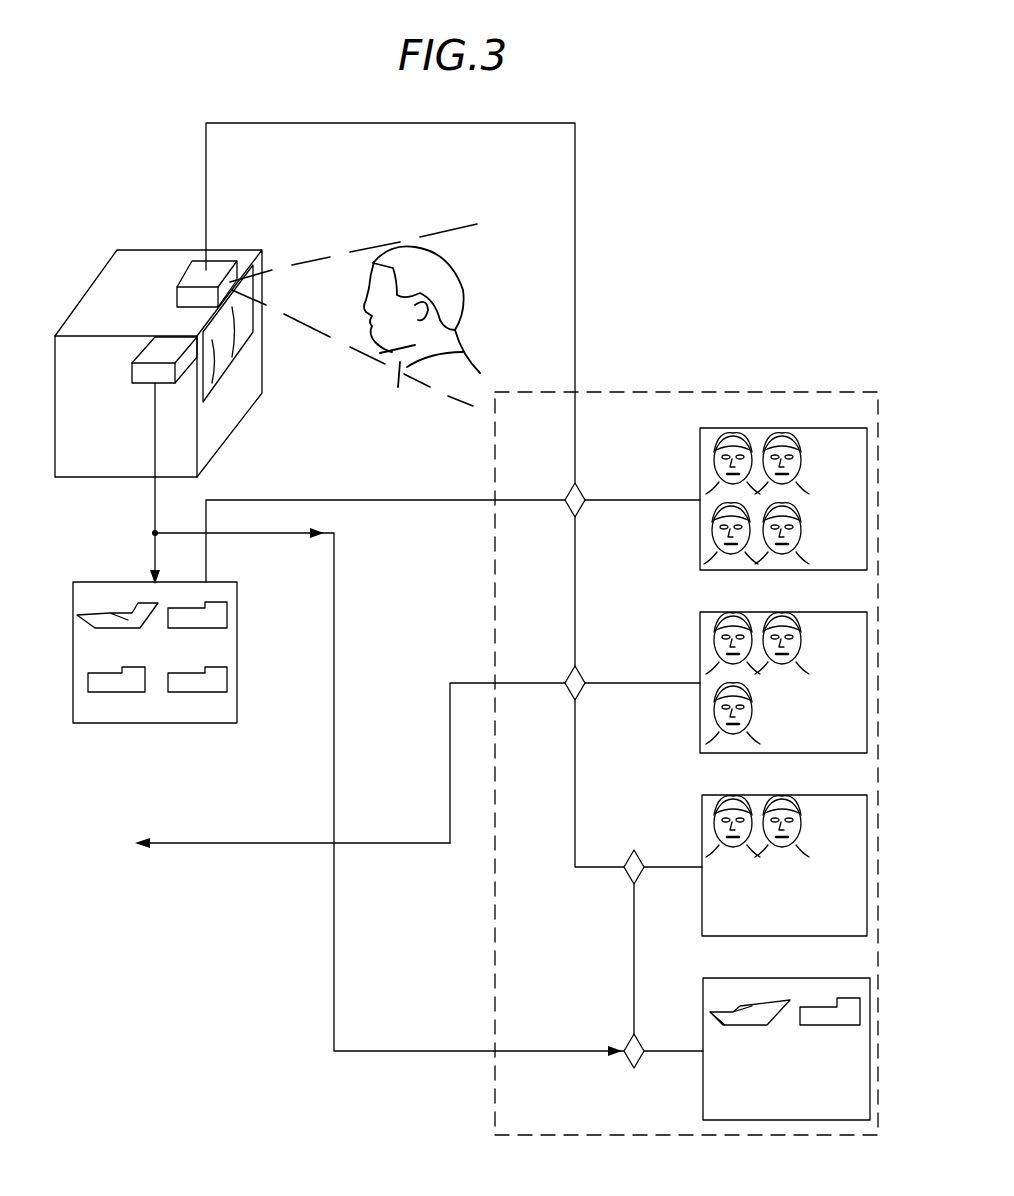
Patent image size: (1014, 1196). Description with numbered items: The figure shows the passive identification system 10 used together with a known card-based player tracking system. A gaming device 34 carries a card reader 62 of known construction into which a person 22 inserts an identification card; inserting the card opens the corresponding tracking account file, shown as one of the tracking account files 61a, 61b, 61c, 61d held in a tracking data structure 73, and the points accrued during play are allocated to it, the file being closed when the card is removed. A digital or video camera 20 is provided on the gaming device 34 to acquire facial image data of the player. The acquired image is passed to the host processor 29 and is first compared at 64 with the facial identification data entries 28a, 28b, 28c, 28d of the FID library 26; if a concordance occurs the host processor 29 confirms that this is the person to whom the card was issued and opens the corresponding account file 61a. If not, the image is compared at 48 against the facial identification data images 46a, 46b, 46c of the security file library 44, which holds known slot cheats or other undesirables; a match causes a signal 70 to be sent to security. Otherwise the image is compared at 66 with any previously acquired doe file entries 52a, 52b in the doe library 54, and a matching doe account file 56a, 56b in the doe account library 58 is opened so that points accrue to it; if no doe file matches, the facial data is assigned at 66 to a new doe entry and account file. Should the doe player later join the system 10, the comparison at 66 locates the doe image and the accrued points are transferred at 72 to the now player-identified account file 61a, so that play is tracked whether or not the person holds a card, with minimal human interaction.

The system 10 is at (752, 306).
The camera 20 is at (192, 275).
The person 22 is at (478, 260).
The facial identification data library 26 is at (867, 500).
The facial identification data entry 28a is at (716, 455).
The facial identification data entry 28b is at (800, 458).
The facial identification data entry 28c is at (715, 523).
The facial identification data entry 28d is at (783, 556).
The host processor 29 is at (765, 392).
The gaming device 34 is at (147, 426).
The security file library 44 is at (867, 683).
The facial identification data image 46a is at (716, 635).
The facial identification data image 46b is at (800, 638).
The facial identification data image 46c is at (715, 703).
The security comparison 48 is at (575, 666).
The doe file entry 52a is at (716, 820).
The doe file entry 52b is at (800, 821).
The doe library 54 is at (867, 867).
The doe account file 56a is at (713, 1018).
The doe account file 56b is at (828, 1012).
The doe account library 58 is at (870, 1051).
The tracking account file 61a is at (90, 618).
The tracking account file 61b is at (218, 615).
The tracking account file 61c is at (115, 685).
The tracking account file 61d is at (218, 682).
The card reader 62 is at (132, 370).
The FID comparison 64 is at (575, 483).
The doe comparison 66 is at (634, 850).
The signal to security 70 is at (423, 843).
The point transfer 72 is at (634, 1068).
The tracking data structure 73 is at (237, 655).